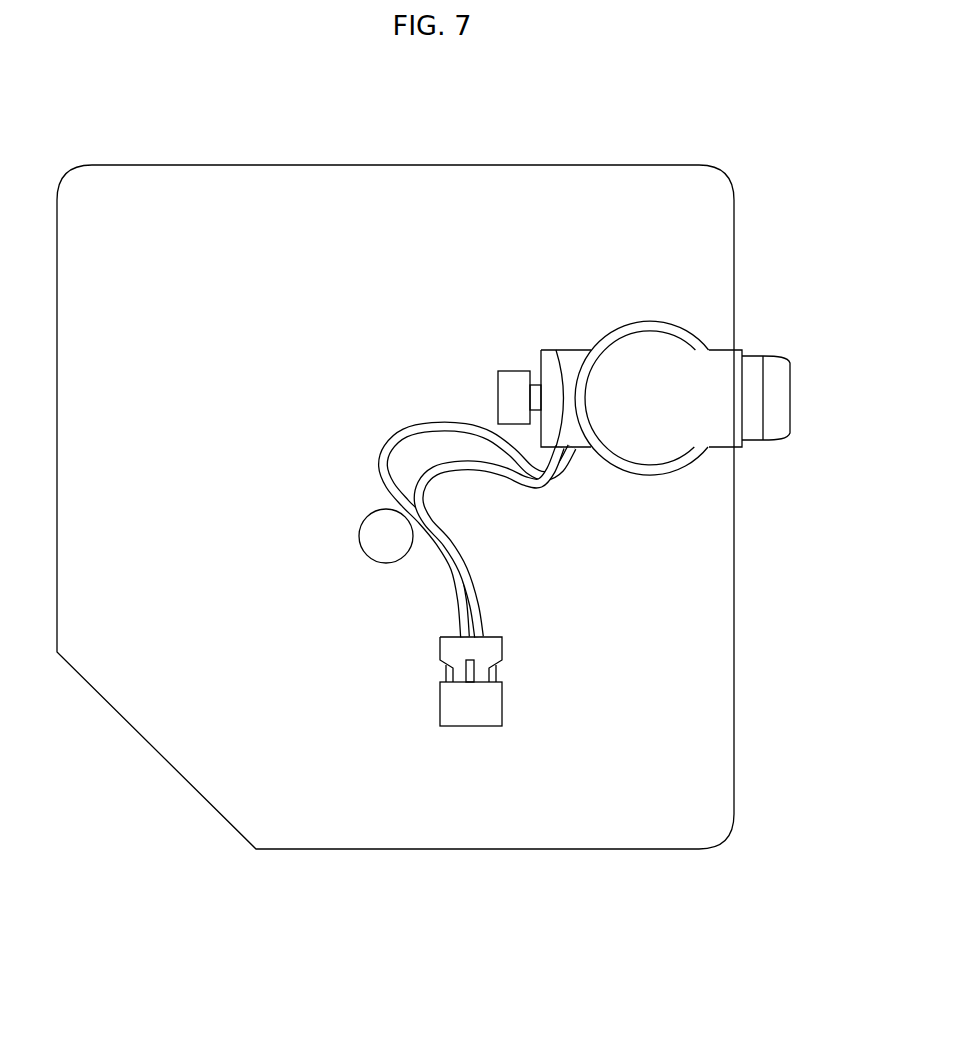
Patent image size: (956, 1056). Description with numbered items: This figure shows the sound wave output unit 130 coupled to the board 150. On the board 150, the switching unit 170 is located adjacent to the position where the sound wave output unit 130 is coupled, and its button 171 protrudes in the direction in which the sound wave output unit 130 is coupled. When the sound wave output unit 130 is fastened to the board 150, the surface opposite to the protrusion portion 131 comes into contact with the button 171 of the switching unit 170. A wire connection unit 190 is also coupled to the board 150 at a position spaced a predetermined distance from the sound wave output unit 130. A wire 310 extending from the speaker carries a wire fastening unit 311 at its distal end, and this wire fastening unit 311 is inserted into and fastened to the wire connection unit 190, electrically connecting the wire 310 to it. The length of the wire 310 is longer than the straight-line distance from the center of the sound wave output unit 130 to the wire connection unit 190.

The board 150 is at (397, 167).
The sound wave output unit 130 is at (652, 353).
The protrusion portion 131 is at (778, 365).
The switching unit 170 is at (505, 385).
The button 171 is at (534, 392).
The wire 310 is at (482, 592).
The wire fastening unit 311 is at (448, 649).
The wire connection unit 190 is at (472, 708).